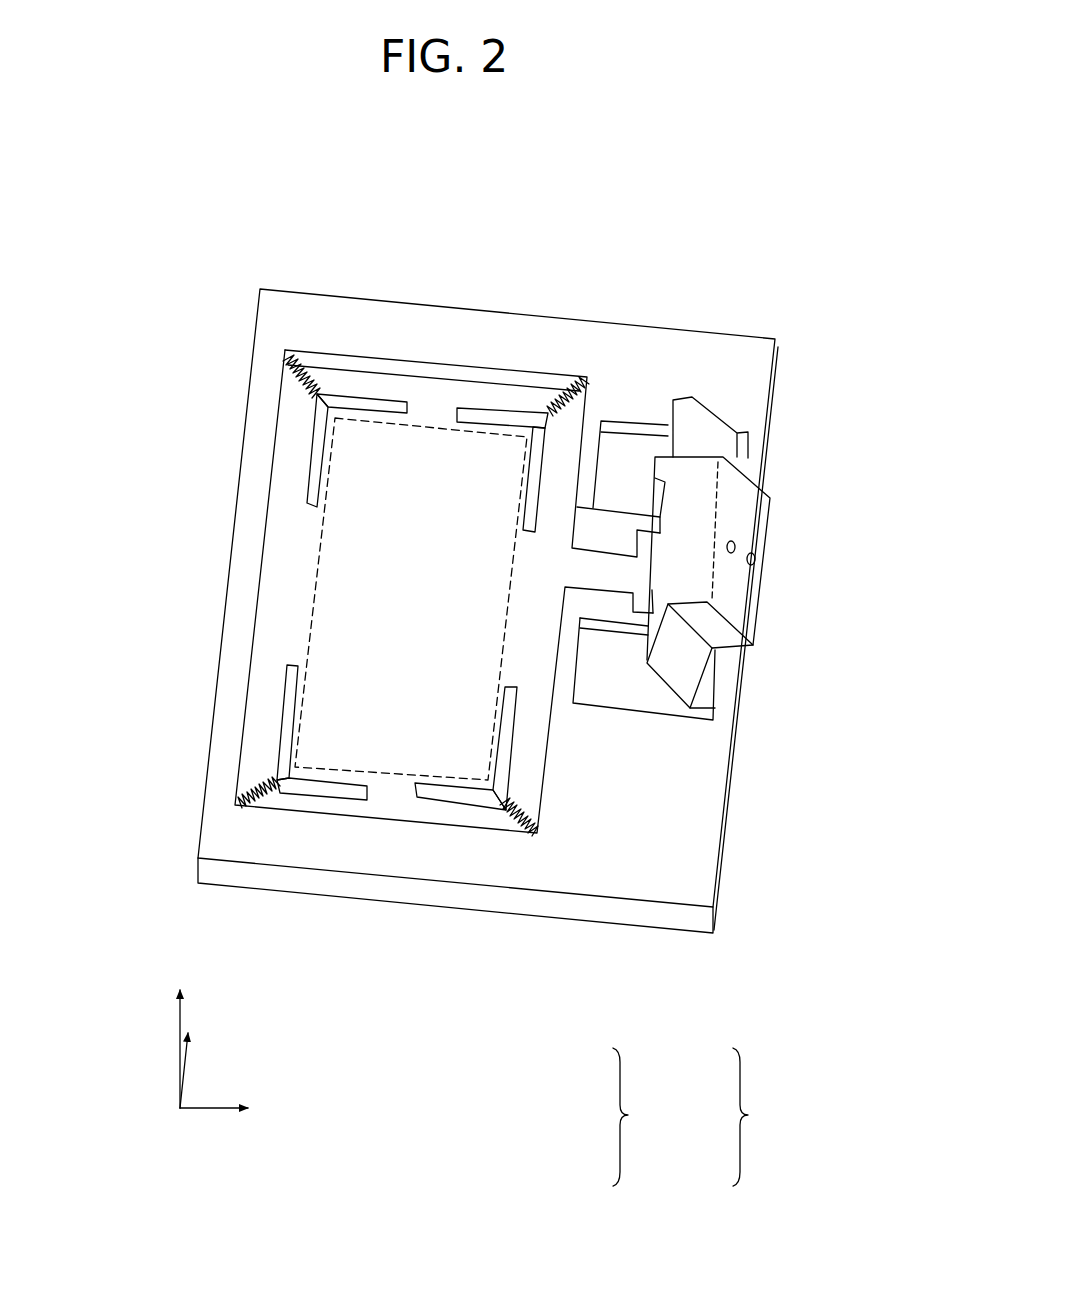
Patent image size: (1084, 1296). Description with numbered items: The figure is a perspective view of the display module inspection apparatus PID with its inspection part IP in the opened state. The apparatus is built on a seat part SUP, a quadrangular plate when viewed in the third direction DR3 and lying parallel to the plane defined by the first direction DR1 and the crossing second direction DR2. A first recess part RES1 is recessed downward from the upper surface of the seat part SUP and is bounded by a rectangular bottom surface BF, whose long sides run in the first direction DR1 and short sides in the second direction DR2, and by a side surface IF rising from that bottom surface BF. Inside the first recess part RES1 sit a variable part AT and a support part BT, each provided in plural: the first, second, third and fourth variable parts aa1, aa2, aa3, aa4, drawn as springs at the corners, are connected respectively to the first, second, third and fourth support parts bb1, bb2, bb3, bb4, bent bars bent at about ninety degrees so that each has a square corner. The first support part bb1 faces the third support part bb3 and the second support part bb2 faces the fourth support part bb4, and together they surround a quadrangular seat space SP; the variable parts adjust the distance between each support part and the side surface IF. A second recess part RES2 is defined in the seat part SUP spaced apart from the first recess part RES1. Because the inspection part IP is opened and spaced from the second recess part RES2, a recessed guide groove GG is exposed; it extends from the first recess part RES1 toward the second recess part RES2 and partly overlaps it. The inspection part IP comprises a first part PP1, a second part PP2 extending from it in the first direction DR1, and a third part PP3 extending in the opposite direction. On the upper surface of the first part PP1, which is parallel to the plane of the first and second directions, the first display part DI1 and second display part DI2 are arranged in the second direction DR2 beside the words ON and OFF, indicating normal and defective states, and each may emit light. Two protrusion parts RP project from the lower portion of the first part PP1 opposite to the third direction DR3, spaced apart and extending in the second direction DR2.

The display module inspection apparatus PID is at (752, 242).
The seat part SUP is at (318, 305).
The side surface IF is at (371, 367).
The bottom surface BF is at (400, 385).
The first recess part RES1 is at (436, 402).
The second recess part RES2 is at (626, 452).
The seat space SP is at (310, 622).
The guide groove GG is at (584, 570).
The protrusion part RP is at (655, 455).
The first part PP1 is at (760, 505).
The second part PP2 is at (705, 422).
The third part PP3 is at (695, 668).
The first display part DI1 is at (733, 553).
The second display part DI2 is at (756, 559).
The inspection part IP is at (739, 612).
The first variable part aa1 is at (290, 366).
The second variable part aa2 is at (265, 775).
The third variable part aa3 is at (520, 812).
The fourth variable part aa4 is at (566, 395).
The first support part bb1 is at (315, 468).
The second support part bb2 is at (290, 712).
The third support part bb3 is at (453, 787).
The fourth support part bb4 is at (495, 415).
The variable part AT is at (612, 1117).
The support part BT is at (733, 1117).
The first direction DR1 is at (208, 1057).
The second direction DR2 is at (239, 1114).
The third direction DR3 is at (181, 1037).